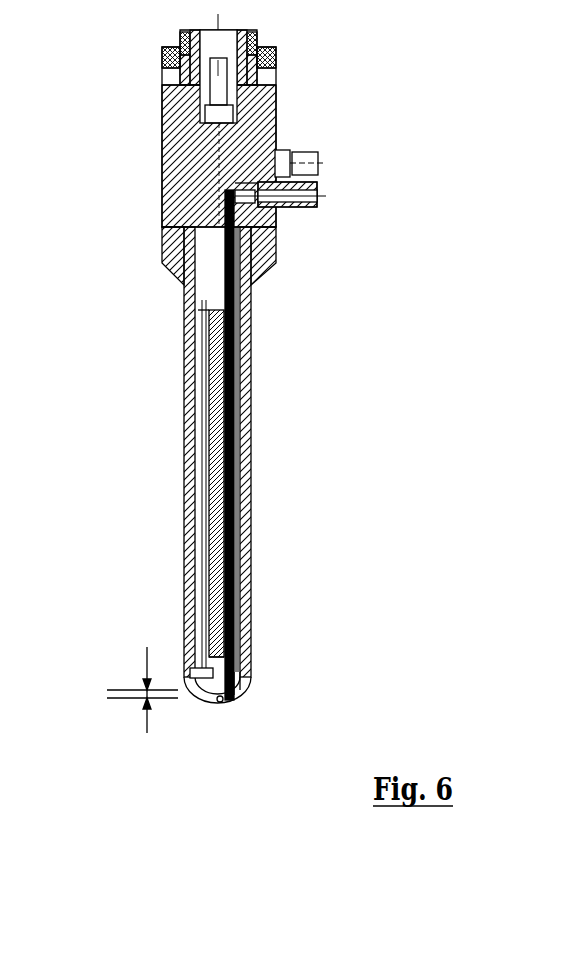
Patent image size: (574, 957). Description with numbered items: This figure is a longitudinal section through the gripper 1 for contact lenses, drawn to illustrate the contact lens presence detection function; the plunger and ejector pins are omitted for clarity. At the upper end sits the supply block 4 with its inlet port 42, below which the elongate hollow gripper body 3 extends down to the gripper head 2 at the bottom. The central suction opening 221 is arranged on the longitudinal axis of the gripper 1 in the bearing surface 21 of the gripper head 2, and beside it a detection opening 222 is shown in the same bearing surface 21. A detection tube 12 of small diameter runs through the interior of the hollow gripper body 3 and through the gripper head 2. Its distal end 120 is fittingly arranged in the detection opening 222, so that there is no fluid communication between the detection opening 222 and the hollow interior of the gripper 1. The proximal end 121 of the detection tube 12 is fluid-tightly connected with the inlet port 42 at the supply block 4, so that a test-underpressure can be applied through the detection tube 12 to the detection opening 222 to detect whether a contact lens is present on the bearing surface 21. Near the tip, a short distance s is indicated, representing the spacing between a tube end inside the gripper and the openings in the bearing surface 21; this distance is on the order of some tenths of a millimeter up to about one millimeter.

The gripper 1 is at (96, 235).
The gripper head 2 is at (250, 685).
The hollow gripper body 3 is at (190, 410).
The supply block 4 is at (163, 138).
The detection tube 12 is at (230, 401).
The bearing surface 21 is at (197, 703).
The inlet port 42 is at (305, 208).
The distal end of detection tube 120 is at (233, 697).
The proximal end of detection tube 121 is at (275, 243).
The central suction opening 221 is at (217, 707).
The detection opening 222 is at (226, 700).
The short distance s is at (128, 690).